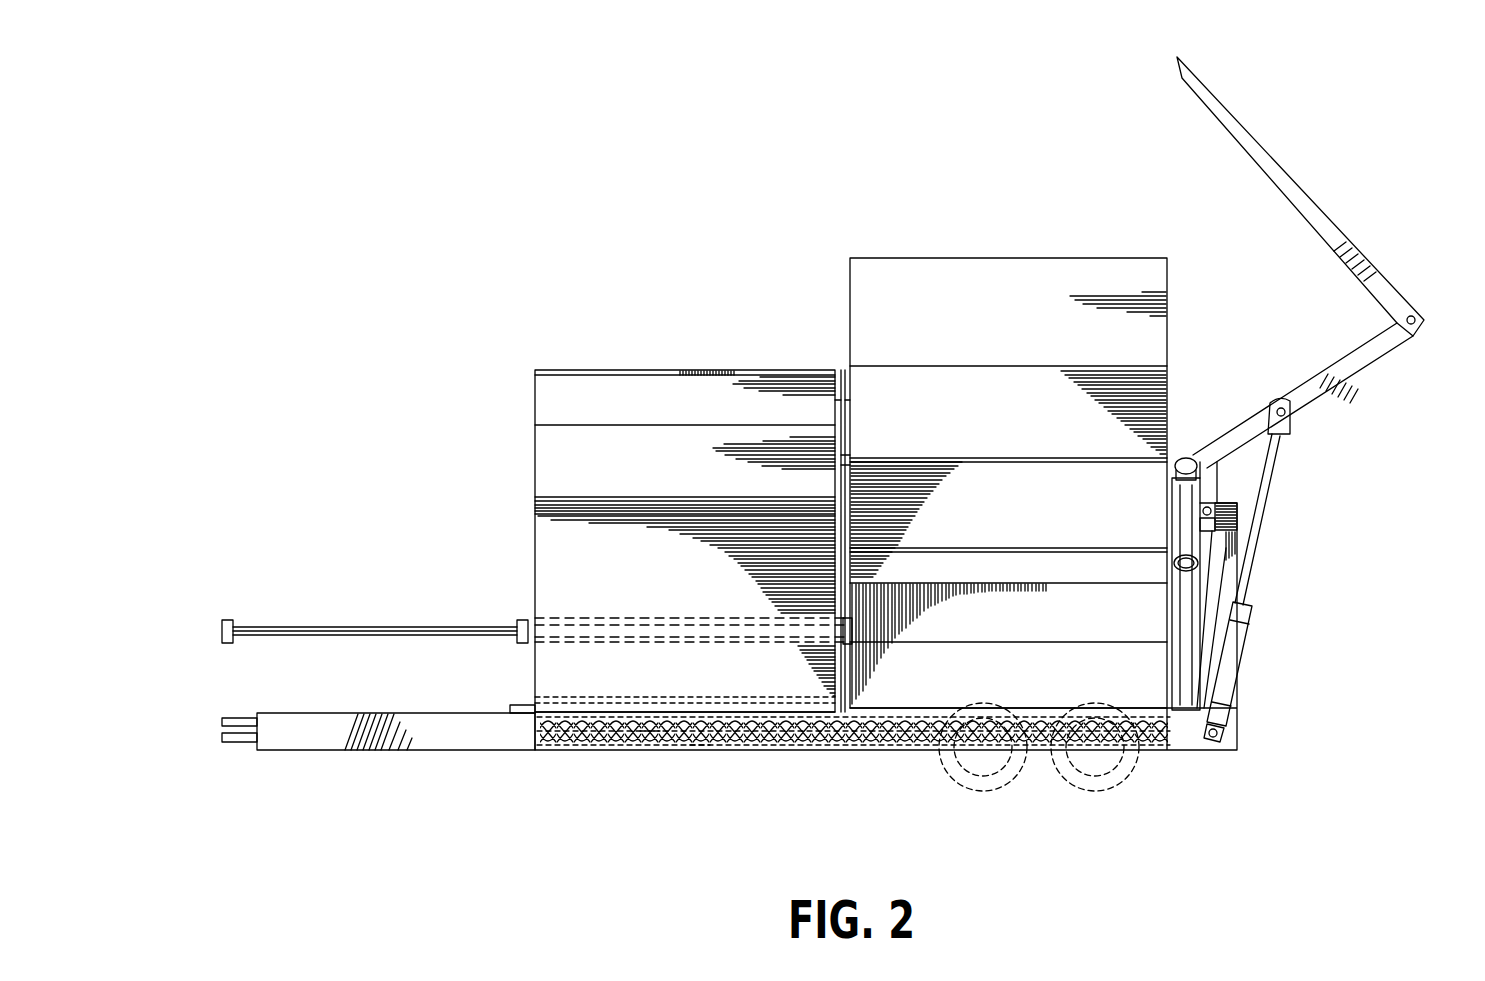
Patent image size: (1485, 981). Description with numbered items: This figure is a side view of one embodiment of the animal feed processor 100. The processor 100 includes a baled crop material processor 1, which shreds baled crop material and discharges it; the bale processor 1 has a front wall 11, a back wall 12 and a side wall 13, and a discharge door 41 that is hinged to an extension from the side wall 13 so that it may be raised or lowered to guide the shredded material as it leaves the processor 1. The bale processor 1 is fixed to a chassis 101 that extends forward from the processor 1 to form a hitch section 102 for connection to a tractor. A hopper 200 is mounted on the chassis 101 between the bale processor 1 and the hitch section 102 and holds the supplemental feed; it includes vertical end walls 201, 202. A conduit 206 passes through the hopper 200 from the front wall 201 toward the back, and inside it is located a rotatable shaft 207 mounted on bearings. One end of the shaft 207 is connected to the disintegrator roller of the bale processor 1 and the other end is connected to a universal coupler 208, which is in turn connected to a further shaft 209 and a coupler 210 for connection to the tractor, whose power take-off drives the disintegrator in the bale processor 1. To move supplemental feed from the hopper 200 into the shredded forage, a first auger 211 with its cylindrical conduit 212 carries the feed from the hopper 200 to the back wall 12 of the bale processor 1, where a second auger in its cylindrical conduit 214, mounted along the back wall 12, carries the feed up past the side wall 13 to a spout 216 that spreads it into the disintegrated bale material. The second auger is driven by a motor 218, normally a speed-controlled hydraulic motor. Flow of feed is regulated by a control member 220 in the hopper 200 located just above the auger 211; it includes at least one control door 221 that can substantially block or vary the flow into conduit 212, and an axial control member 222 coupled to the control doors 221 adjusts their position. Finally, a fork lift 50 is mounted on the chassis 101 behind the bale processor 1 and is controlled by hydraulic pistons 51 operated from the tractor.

The animal feed processor 100 is at (801, 172).
The baled crop material processor 1 is at (1111, 244).
The side wall 13 is at (1008, 268).
The front wall 11 is at (846, 458).
The back wall 12 is at (1184, 456).
The motor 218 is at (1187, 457).
The spout 216 is at (1187, 535).
The cylindrical conduit 214 is at (1280, 570).
The hydraulic pistons 51 is at (1233, 658).
The fork lift 50 is at (1367, 394).
The discharge door 41 is at (1053, 676).
The chassis 101 is at (1157, 748).
The hitch section 102 is at (283, 750).
The hopper 200 is at (583, 346).
The end wall 201 is at (535, 462).
The end wall 202 is at (838, 402).
The conduit 206 is at (692, 616).
The rotatable shaft 207 is at (640, 628).
The universal coupler 208 is at (520, 620).
The further shaft 209 is at (336, 626).
The coupler 210 is at (229, 620).
The axial control member 222 is at (512, 705).
The control door 221 is at (592, 747).
The first auger 211 is at (645, 748).
The cylindrical conduit 212 is at (697, 748).
The control member 220 is at (750, 698).